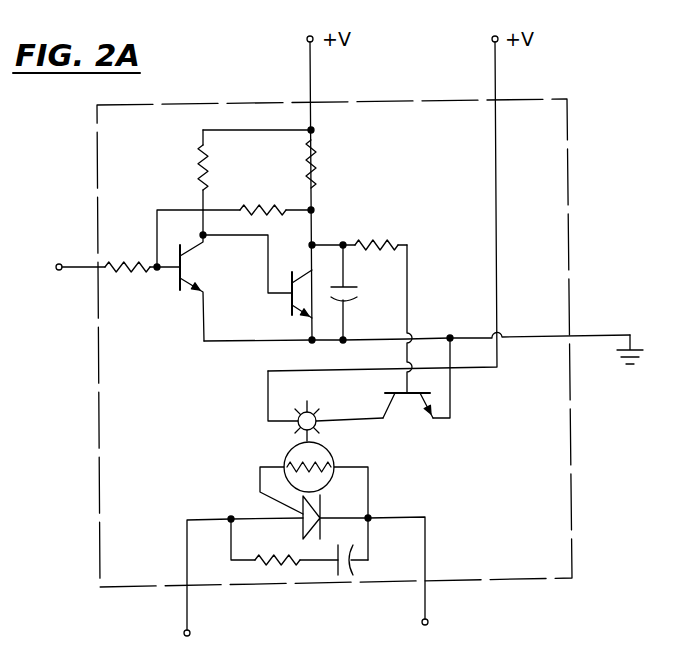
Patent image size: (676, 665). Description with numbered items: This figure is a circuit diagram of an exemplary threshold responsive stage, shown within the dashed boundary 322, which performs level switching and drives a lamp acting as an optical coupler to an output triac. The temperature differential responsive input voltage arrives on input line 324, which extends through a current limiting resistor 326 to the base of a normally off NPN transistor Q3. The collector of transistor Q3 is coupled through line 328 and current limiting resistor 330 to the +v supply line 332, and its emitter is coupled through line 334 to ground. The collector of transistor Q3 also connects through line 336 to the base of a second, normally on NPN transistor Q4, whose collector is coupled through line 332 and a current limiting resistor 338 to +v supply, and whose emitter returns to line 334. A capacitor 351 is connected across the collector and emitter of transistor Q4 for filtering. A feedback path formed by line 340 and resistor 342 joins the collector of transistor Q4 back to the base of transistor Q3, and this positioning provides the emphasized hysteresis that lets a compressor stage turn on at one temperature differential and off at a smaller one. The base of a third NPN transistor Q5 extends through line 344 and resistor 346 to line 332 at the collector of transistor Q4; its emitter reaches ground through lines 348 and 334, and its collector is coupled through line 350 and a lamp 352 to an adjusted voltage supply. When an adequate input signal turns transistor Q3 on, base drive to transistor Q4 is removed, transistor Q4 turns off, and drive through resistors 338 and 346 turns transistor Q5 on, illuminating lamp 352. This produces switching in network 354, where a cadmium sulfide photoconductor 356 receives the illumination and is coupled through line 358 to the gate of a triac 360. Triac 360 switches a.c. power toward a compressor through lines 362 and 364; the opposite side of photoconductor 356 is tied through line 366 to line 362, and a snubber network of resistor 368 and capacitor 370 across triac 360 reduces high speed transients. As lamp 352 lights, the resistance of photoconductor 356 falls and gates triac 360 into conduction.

The dashed boundary 322 is at (567, 118).
The input line 324 is at (77, 264).
The current limiting resistor 326 is at (147, 260).
The line 328 is at (207, 182).
The current limiting resistor 330 is at (199, 158).
The +v supply line 332 is at (311, 80).
The ground line 334 is at (242, 341).
The line 336 is at (268, 249).
The current limiting resistor 338 is at (316, 162).
The line 340 is at (175, 208).
The resistor 342 is at (254, 208).
The line 344 is at (407, 294).
The resistor 346 is at (369, 240).
The line 348 is at (452, 402).
The line 350 is at (268, 398).
The capacitor 351 is at (352, 288).
The lamp 352 is at (297, 428).
The network 354 is at (549, 483).
The photoconductor 356 is at (327, 452).
The line 358 is at (258, 477).
The triac 360 is at (320, 510).
The line 362 is at (427, 556).
The line 364 is at (187, 543).
The line 366 is at (370, 486).
The resistor 368 is at (281, 552).
The capacitor 370 is at (352, 570).
The NPN transistor Q3 is at (195, 286).
The NPN transistor Q4 is at (306, 294).
The NPN transistor Q5 is at (408, 411).